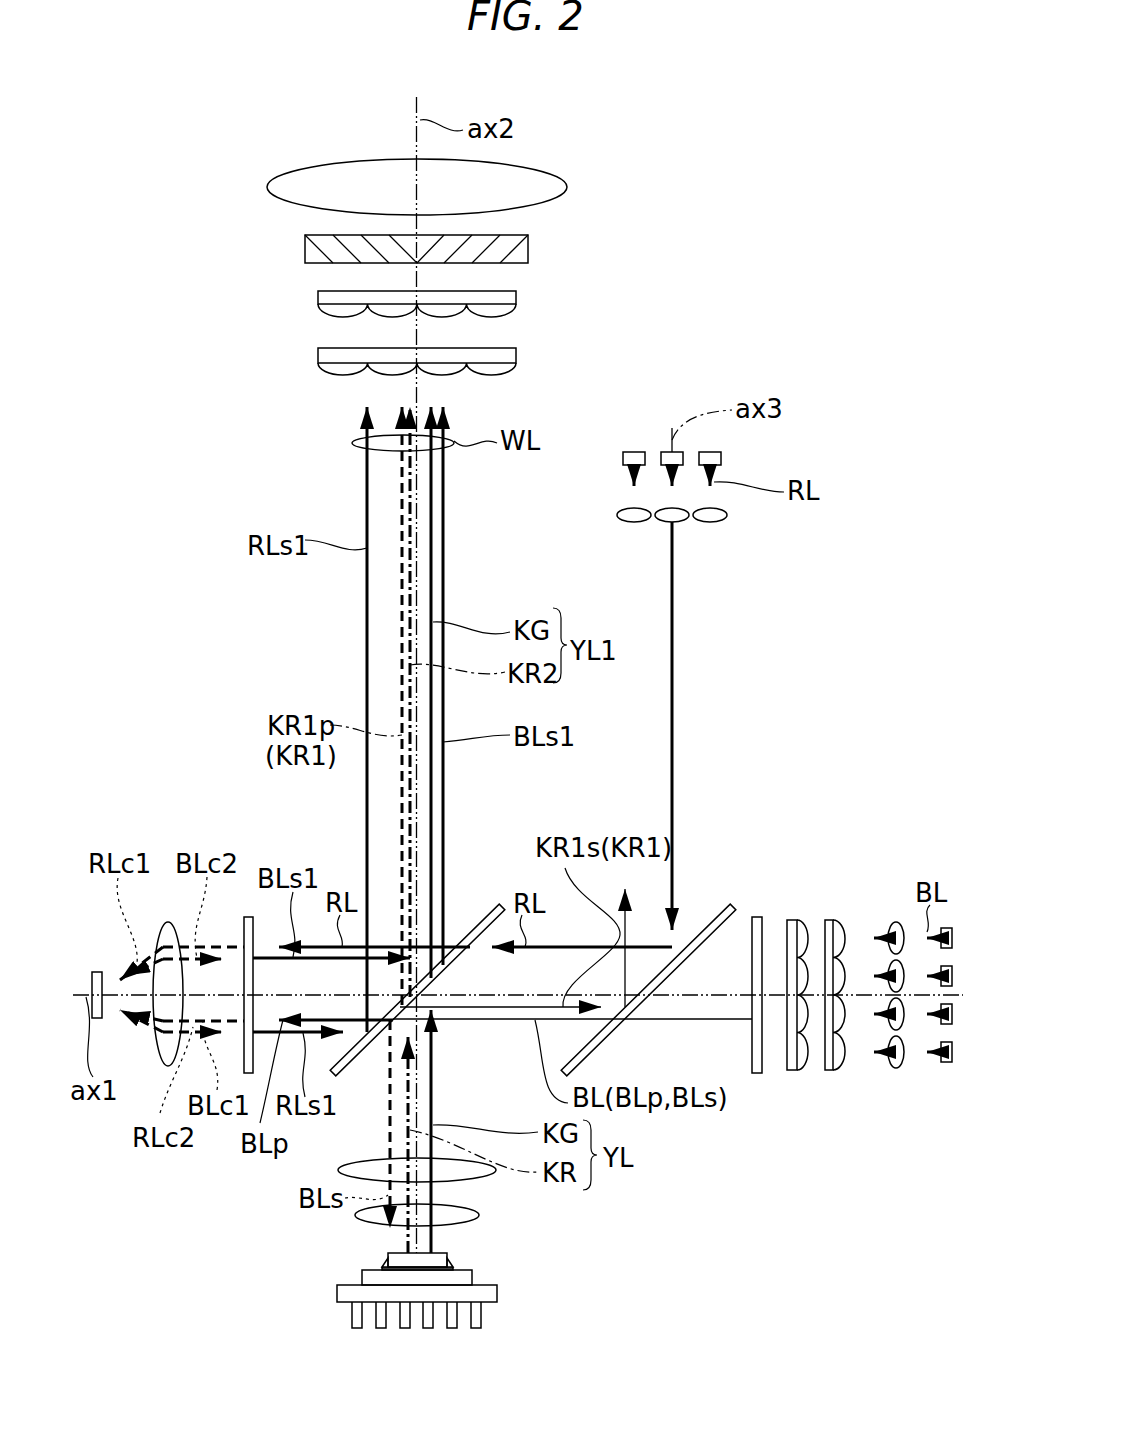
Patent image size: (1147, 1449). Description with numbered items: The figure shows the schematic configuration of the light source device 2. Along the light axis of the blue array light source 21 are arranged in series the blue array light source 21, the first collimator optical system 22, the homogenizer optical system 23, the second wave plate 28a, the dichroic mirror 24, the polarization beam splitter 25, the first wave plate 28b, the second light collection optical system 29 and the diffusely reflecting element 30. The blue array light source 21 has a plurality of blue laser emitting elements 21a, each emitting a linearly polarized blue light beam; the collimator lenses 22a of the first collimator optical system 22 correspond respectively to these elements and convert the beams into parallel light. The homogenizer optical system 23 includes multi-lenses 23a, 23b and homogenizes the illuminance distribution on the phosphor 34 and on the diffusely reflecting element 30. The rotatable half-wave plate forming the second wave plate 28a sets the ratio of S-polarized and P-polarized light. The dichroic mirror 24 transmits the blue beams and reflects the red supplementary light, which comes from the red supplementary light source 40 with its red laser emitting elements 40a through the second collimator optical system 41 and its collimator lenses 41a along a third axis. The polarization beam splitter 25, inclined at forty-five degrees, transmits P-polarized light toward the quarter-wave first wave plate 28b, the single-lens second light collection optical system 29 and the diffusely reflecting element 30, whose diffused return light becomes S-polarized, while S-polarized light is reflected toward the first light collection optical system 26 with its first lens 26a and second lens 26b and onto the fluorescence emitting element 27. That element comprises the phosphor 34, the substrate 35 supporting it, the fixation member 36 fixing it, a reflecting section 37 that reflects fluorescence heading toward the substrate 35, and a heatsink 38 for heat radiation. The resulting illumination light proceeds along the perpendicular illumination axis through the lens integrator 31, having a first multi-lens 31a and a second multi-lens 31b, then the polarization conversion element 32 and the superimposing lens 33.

The light source device 2 is at (815, 148).
The blue array light source 21 is at (966, 989).
The blue laser emitting element 21a is at (946, 1062).
The first collimator optical system 22 is at (914, 989).
The collimator lens 22a is at (896, 1068).
The homogenizer optical system 23 is at (831, 1051).
The multi-lens 23a is at (845, 1060).
The multi-lens 23b is at (808, 1065).
The dichroic mirror 24 is at (733, 905).
The polarization beam splitter 25 is at (365, 1055).
The first light collection optical system 26 is at (489, 1217).
The first lens 26a is at (475, 1180).
The second lens 26b is at (465, 1222).
The fluorescence emitting element 27 is at (439, 1301).
The second wave plate 28a is at (757, 1068).
The first wave plate 28b is at (248, 917).
The second light collection optical system 29 is at (164, 935).
The diffusely reflecting element 30 is at (98, 972).
The lens integrator 31 is at (498, 322).
The first multi-lens 31a is at (516, 355).
The second multi-lens 31b is at (516, 298).
The polarization conversion element 32 is at (528, 252).
The superimposing lens 33 is at (520, 166).
The phosphor 34 is at (395, 1261).
The substrate 35 is at (367, 1277).
The fixation member 36 is at (455, 1260).
The reflecting section 37 is at (428, 1268).
The heatsink 38 is at (347, 1293).
The red supplementary light source 40 is at (708, 424).
The red laser emitting element 40a is at (634, 452).
The second collimator optical system 41 is at (713, 551).
The collimator lens 41a is at (634, 522).